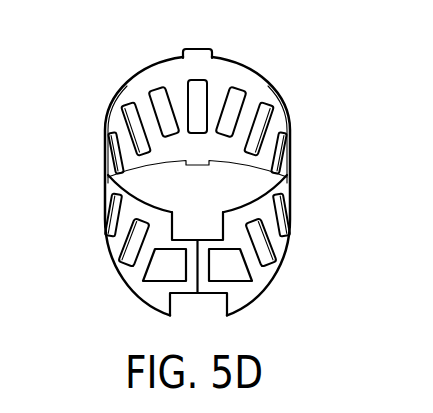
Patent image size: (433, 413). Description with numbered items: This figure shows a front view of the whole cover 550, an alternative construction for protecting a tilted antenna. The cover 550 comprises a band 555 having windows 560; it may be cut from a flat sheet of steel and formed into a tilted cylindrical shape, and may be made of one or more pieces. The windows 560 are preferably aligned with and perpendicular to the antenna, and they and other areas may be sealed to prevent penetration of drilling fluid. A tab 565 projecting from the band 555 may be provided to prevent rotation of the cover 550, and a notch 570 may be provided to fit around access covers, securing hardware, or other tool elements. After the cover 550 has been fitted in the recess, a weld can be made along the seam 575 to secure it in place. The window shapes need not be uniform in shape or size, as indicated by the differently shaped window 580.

The cover 550 is at (71, 256).
The band 555 is at (128, 82).
The windows 560 is at (162, 88).
The tabs 565 is at (212, 50).
The notches 570 is at (175, 220).
The seam 575 is at (198, 293).
The window 580 is at (153, 282).